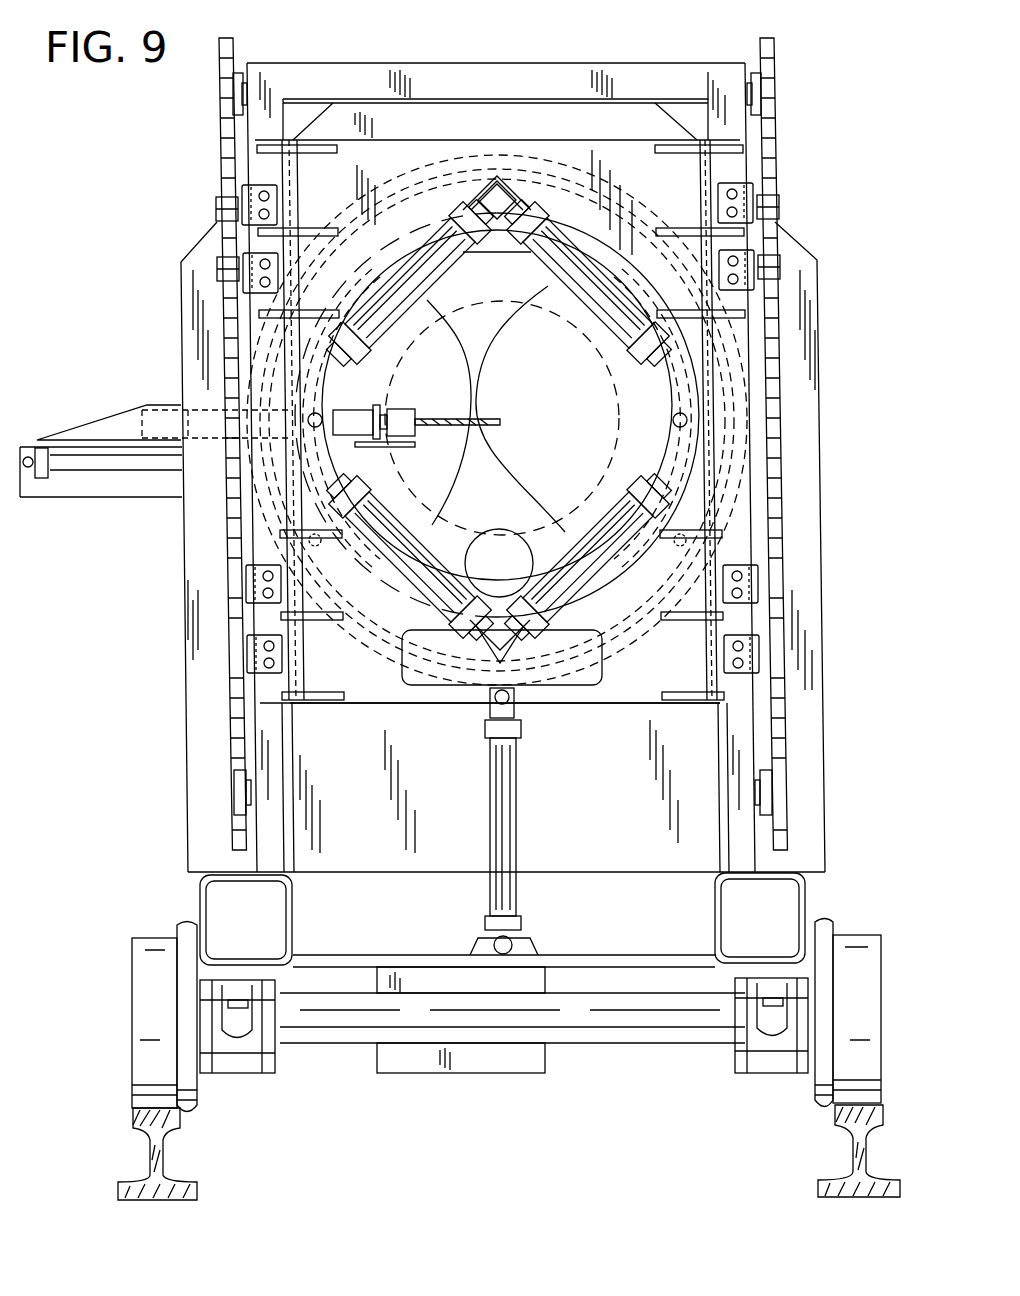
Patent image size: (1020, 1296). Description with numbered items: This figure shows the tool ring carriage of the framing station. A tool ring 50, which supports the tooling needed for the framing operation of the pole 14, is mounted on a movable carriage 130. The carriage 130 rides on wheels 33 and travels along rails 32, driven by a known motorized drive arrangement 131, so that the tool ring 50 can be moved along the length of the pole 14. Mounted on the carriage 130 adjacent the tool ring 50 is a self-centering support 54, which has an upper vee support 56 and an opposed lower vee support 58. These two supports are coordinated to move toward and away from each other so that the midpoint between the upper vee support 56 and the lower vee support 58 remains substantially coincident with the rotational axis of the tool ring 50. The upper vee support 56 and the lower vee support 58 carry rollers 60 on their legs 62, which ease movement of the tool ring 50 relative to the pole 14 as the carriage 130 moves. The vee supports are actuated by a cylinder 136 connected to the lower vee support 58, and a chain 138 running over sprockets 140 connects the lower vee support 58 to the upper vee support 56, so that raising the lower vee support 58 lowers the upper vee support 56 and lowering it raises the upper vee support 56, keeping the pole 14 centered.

The pole 14 is at (768, 391).
The rails 32 is at (162, 1166).
The wheels 33 is at (160, 936).
The tool ring 50 is at (566, 160).
The self-centering support 54 is at (353, 716).
The upper vee support 56 is at (473, 206).
The lower vee support 58 is at (488, 655).
The rollers 60 is at (468, 417).
The legs 62 is at (400, 277).
The carriage 130 is at (177, 713).
The motorized drive arrangement 131 is at (466, 1068).
The cylinder 136 is at (518, 826).
The chain 138 is at (216, 128).
The sprockets 140 is at (215, 72).